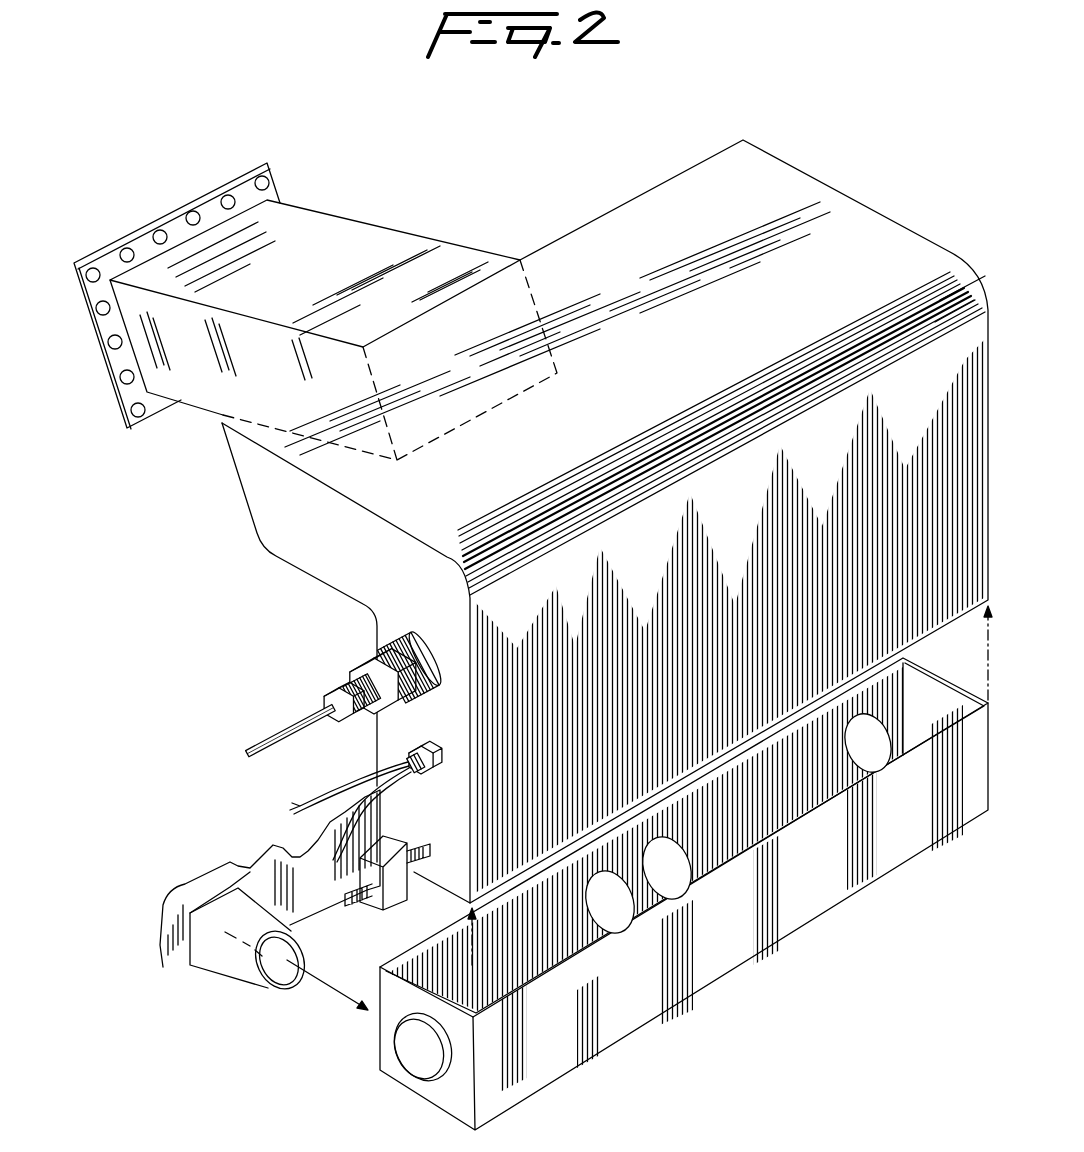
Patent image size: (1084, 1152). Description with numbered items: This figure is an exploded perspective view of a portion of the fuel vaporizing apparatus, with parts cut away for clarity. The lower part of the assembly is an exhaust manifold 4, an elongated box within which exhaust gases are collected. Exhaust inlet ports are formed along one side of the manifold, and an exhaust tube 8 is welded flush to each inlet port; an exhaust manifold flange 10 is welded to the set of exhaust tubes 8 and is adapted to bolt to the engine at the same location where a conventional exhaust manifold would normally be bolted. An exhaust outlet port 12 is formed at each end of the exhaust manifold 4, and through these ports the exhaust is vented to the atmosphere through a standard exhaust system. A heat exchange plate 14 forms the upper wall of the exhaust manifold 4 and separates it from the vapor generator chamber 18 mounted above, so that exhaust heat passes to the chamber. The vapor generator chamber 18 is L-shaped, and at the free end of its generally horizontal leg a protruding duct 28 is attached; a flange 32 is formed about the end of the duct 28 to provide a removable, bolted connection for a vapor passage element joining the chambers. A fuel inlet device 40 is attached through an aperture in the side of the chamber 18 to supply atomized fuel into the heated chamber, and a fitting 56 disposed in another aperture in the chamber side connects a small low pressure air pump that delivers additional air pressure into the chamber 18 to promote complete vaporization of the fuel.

The exhaust manifold 4 is at (627, 1012).
The exhaust tube 8 is at (232, 965).
The exhaust manifold flange 10 is at (260, 855).
The exhaust outlet port 12 is at (427, 1057).
The heat exchange plate 14 is at (921, 640).
The vapor generator chamber 18 is at (817, 178).
The protruding duct 28 is at (332, 236).
The flange 32 is at (210, 192).
The fuel inlet device 40 is at (368, 657).
The fitting 56 is at (372, 900).